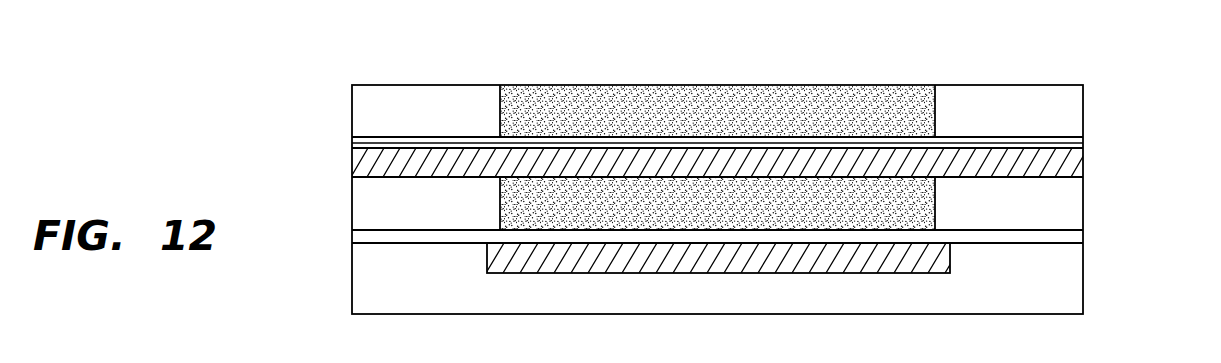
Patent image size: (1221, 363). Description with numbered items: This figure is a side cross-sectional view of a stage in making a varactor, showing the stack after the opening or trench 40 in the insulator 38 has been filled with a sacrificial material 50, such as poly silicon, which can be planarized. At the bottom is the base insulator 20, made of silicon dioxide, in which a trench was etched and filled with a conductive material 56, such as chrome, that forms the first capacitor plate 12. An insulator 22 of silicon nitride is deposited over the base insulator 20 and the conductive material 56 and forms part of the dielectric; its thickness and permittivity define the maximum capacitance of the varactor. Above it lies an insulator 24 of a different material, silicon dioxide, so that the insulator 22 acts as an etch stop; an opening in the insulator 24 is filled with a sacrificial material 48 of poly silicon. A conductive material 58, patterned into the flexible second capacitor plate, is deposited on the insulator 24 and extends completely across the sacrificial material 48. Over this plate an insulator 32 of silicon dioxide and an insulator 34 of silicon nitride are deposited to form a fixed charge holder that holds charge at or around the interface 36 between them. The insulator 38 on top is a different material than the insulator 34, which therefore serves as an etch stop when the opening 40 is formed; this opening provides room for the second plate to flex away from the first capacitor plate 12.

The opening or trench 40 is at (842, 64).
The insulator 38 is at (355, 103).
The insulator 24 is at (357, 203).
The insulator 22 is at (356, 238).
The base insulator 20 is at (357, 259).
The first capacitor plate 12 is at (487, 260).
The sacrificial material 50 is at (932, 114).
The sacrificial material 48 is at (932, 192).
The conductive material 56 is at (942, 258).
The insulator 34 is at (1083, 139).
The interface 36 is at (1083, 143).
The insulator 32 is at (1083, 147).
The conductive material 58 is at (1070, 170).